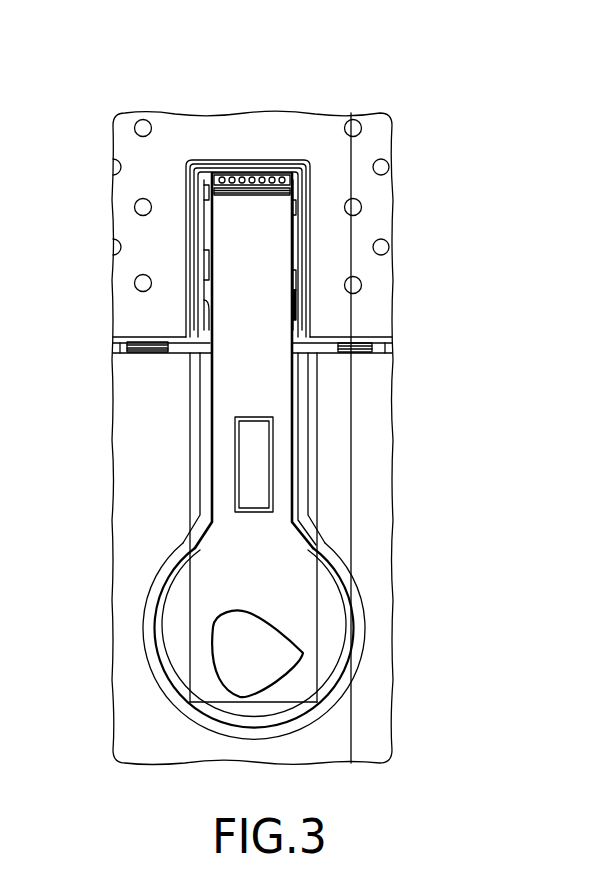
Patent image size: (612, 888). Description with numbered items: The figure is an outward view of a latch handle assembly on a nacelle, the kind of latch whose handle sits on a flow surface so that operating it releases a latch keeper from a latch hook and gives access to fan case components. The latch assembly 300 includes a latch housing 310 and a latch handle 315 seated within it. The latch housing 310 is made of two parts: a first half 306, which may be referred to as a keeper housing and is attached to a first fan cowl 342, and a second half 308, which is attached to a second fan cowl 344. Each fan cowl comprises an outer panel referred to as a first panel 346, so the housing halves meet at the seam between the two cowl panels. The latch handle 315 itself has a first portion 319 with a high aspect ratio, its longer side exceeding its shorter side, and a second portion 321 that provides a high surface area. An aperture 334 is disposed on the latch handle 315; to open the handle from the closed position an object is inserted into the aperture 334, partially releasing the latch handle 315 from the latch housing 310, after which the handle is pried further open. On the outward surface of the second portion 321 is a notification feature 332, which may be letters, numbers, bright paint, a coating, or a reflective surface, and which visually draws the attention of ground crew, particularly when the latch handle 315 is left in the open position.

The latch assembly 300 is at (408, 73).
The first half 306 is at (303, 197).
The second half 308 is at (358, 643).
The latch housing 310 is at (205, 427).
The latch handle 315 is at (269, 596).
The first portion 319 is at (280, 348).
The second portion 321 is at (332, 613).
The notification feature 332 is at (240, 655).
The aperture 334 is at (272, 477).
The first fan cowl 342 is at (172, 161).
The second fan cowl 344 is at (172, 490).
The first panel 346 is at (355, 315).